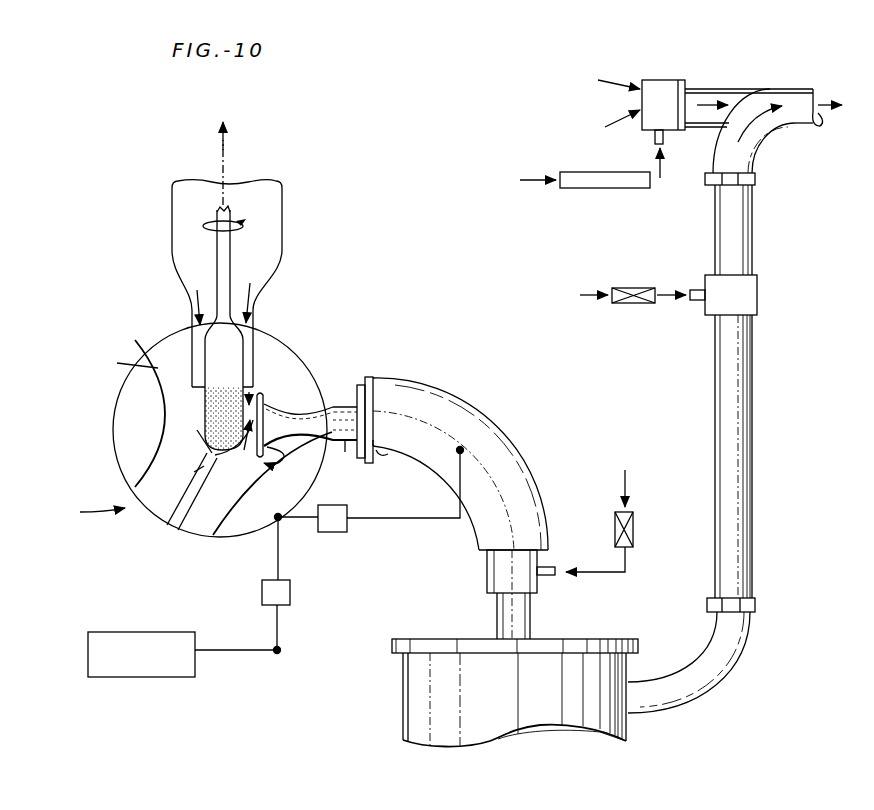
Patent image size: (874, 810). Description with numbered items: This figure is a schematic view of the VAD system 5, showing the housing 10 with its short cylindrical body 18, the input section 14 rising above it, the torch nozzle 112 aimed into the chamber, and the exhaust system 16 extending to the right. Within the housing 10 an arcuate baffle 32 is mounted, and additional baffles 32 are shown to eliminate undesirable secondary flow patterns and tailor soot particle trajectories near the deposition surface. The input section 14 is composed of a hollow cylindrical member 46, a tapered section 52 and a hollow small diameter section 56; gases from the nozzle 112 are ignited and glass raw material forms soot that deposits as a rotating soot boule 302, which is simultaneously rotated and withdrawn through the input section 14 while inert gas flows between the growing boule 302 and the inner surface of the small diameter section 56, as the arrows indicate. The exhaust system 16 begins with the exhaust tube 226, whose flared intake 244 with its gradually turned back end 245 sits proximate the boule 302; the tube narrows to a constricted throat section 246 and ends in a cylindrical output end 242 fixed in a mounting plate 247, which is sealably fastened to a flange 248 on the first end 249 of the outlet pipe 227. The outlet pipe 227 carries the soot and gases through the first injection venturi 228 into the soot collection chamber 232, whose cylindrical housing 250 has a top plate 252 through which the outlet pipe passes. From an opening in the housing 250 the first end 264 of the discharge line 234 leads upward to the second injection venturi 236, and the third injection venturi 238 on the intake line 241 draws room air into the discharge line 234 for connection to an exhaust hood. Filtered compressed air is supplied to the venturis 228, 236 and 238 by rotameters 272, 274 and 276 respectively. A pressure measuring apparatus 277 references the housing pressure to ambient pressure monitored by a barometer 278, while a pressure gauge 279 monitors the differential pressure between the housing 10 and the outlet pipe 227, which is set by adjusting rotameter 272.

The VAD system 5 is at (92, 517).
The housing 10 is at (125, 482).
The input section 14 is at (158, 242).
The exhaust system 16 is at (428, 499).
The cylindrical body 18 is at (222, 452).
The baffle 32 is at (162, 372).
The hollow cylindrical member 46 is at (282, 252).
The tapered section 52 is at (258, 302).
The small diameter section 56 is at (192, 345).
The nozzle 112 is at (178, 524).
The exhaust tube 226 is at (310, 410).
The outlet pipe 227 is at (442, 410).
The first injection venturi 228 is at (490, 576).
The soot collection chamber 232 is at (590, 639).
The discharge line 234 is at (750, 450).
The second injection venturi 236 is at (758, 297).
The third injection venturi 238 is at (645, 128).
The intake line 241 is at (750, 102).
The output end 242 is at (348, 447).
The flared intake 244 is at (274, 402).
The turned back end 245 is at (293, 461).
The constricted throat section 246 is at (318, 444).
The mounting plate 247 is at (368, 420).
The flange 248 is at (383, 405).
The first end 249 is at (382, 452).
The cylindrical housing 250 is at (408, 686).
The top plate 252 is at (410, 639).
The first end 264 is at (648, 680).
The rotameter 272 is at (634, 525).
The rotameter 274 is at (632, 305).
The rotameter 276 is at (605, 188).
The pressure measuring apparatus 277 is at (262, 598).
The barometer 278 is at (148, 632).
The pressure gauge 279 is at (332, 533).
The soot boule 302 is at (233, 376).